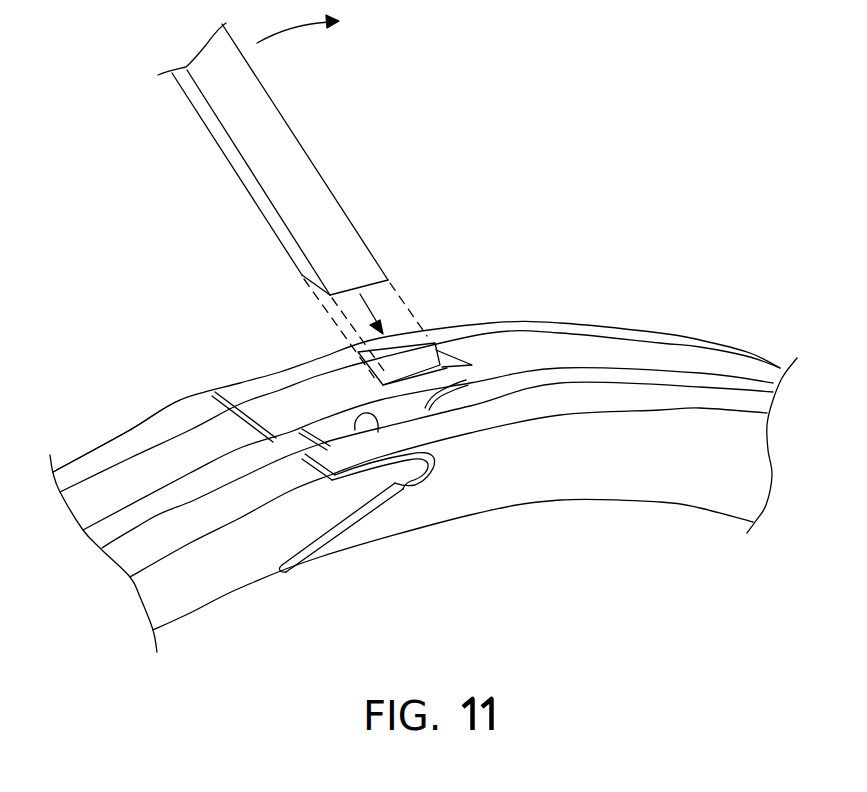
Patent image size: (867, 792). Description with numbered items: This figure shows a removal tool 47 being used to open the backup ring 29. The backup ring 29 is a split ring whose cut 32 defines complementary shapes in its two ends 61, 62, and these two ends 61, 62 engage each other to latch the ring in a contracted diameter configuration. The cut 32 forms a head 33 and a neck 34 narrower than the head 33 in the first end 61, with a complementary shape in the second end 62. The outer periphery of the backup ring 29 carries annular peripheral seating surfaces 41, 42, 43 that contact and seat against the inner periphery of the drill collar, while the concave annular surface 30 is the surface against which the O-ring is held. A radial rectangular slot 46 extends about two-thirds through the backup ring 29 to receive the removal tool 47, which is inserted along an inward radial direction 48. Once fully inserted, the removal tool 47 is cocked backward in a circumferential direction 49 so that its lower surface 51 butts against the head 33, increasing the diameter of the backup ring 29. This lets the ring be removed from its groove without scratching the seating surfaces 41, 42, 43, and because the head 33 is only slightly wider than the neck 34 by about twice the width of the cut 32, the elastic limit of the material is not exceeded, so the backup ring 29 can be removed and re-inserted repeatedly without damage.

The backup ring 29 is at (515, 205).
The concave annular surface 30 is at (560, 472).
The cut 32 is at (237, 392).
The head 33 is at (440, 480).
The neck 34 is at (413, 490).
The first annular peripheral seating surface 41 is at (582, 325).
The second annular peripheral seating surface 42 is at (645, 352).
The third annular peripheral seating surface 43 is at (697, 395).
The radial rectangular slot 46 is at (421, 356).
The removal tool 47 is at (312, 176).
The inward radial direction 48 is at (376, 310).
The circumferential direction 49 is at (297, 30).
The lower surface 51 is at (301, 275).
The first end 61 is at (148, 408).
The second end 62 is at (534, 314).